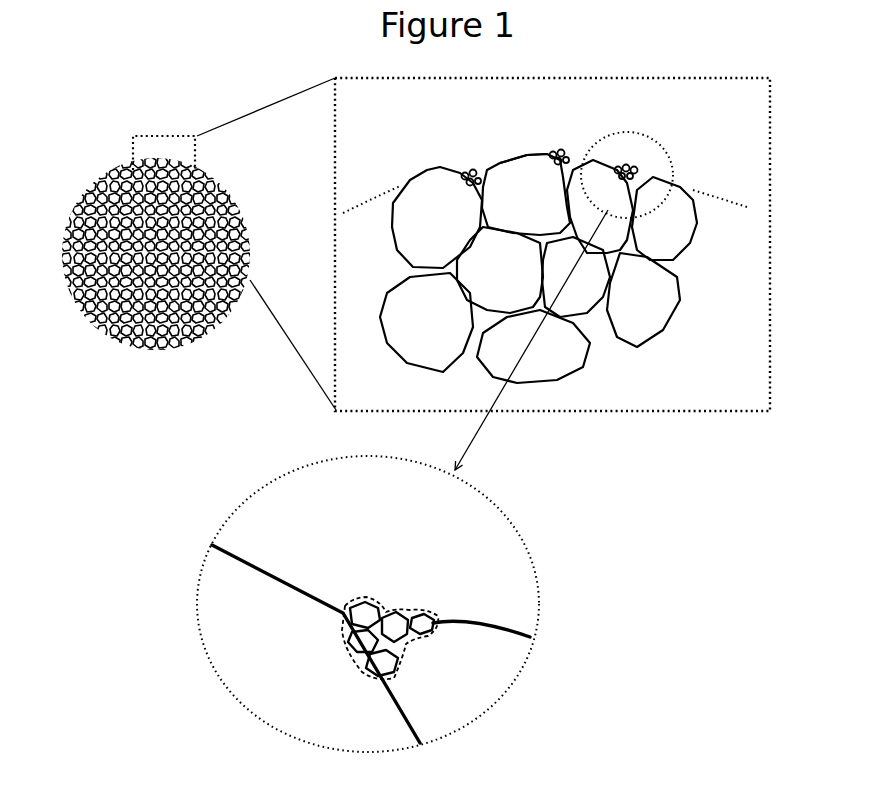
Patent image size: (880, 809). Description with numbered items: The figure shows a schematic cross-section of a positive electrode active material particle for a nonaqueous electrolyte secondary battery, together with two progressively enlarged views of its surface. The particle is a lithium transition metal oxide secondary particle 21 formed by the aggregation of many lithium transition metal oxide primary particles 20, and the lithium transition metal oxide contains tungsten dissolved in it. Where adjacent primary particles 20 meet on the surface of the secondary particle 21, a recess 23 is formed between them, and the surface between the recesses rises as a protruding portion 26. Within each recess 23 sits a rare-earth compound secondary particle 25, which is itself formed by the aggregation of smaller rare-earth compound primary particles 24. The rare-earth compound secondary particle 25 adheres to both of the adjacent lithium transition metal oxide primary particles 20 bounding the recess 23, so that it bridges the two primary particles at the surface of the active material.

The lithium transition metal oxide primary particle 20 is at (163, 167).
The lithium transition metal oxide secondary particle 21 is at (93, 147).
The recess 23 is at (472, 162).
The rare-earth compound primary particle 24 is at (640, 163).
The rare-earth compound secondary particle 25 is at (400, 605).
The protruding portion 26 is at (510, 148).